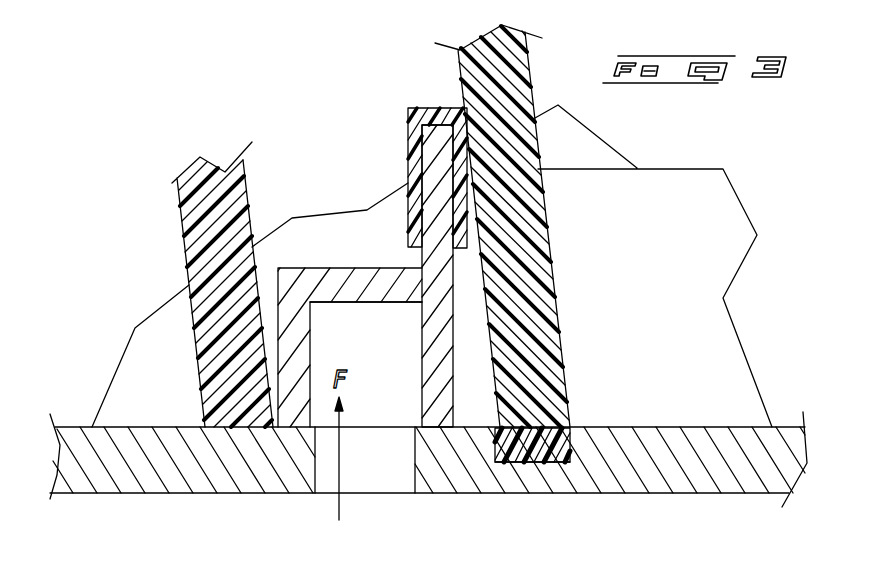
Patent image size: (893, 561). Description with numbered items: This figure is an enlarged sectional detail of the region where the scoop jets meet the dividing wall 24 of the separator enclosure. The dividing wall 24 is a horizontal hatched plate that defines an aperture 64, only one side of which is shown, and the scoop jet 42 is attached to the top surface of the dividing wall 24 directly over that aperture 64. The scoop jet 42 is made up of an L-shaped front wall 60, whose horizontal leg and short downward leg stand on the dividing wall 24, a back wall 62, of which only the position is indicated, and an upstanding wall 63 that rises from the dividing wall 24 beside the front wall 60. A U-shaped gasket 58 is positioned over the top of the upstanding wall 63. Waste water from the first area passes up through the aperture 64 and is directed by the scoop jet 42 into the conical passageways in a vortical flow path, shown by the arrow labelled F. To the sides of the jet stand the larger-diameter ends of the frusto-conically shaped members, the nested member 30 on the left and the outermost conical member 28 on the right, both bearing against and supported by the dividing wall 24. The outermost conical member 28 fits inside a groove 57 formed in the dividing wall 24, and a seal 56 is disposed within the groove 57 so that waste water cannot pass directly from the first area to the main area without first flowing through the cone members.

The dividing wall 24 is at (780, 457).
The outermost conical member 28 is at (517, 282).
The frusto-conically shaped member 30 is at (213, 245).
The scoop jet 42 is at (349, 230).
The seal 56 is at (538, 443).
The groove 57 is at (540, 443).
The U-shaped gasket 58 is at (437, 117).
The L-shaped front wall 60 is at (380, 285).
The back wall 62 is at (393, 353).
The upstanding wall 63 is at (438, 337).
The aperture 64 is at (415, 462).